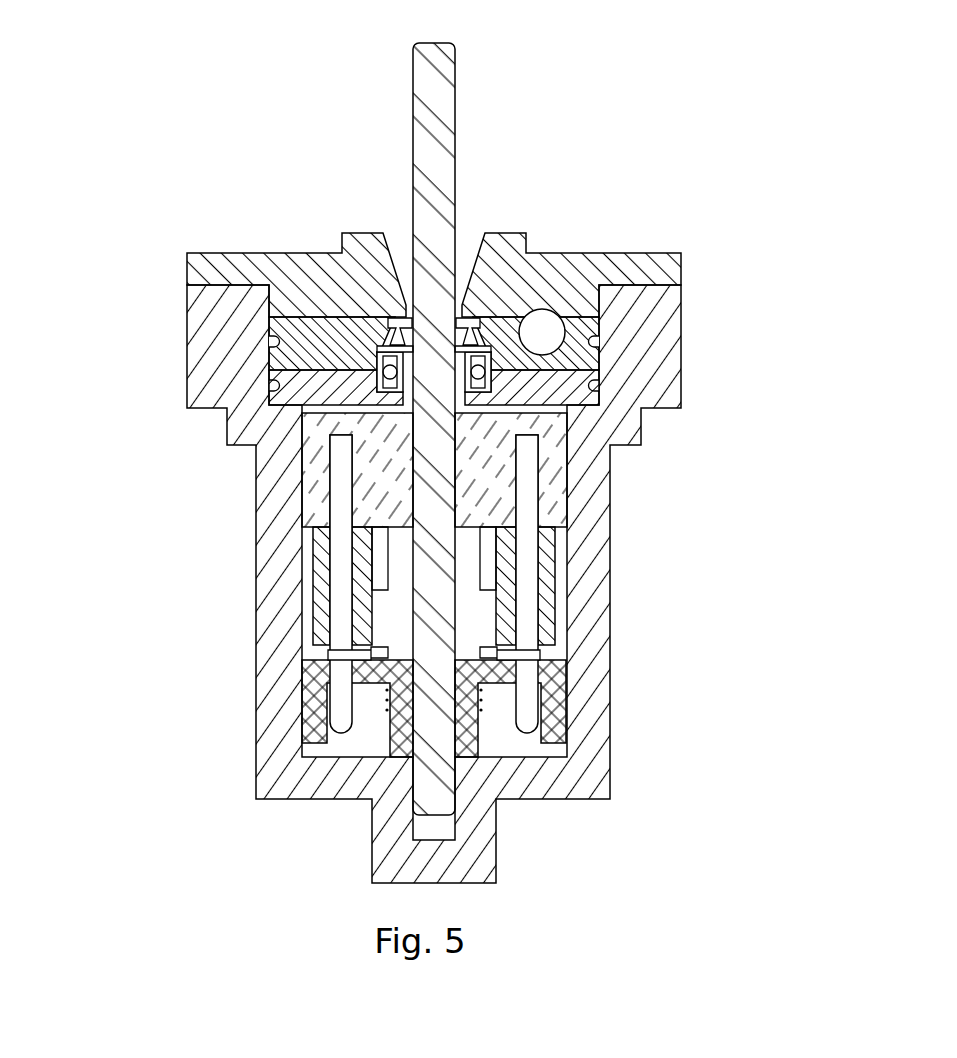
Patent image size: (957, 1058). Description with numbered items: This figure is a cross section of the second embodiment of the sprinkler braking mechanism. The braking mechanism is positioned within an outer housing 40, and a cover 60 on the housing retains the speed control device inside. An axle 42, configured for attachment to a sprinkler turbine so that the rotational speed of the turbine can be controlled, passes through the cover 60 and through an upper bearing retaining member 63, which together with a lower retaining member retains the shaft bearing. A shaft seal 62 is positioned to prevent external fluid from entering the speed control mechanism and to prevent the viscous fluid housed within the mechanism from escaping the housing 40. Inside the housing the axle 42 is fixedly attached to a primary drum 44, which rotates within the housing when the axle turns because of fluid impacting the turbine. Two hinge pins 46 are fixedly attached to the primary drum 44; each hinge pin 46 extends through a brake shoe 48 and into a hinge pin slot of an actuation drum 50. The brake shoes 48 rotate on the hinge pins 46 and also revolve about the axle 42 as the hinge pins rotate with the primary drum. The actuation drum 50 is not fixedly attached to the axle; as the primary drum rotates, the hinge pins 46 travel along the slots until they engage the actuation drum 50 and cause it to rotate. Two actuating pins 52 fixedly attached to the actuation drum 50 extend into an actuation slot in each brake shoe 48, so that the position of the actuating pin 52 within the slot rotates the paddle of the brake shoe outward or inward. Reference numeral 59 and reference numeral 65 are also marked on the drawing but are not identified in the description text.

The outer housing 40 is at (196, 330).
The axle 42 is at (455, 81).
The primary drum 44 is at (553, 488).
The hinge pin 46 is at (338, 555).
The brake shoe 48 is at (553, 535).
The actuation drum 50 is at (313, 698).
The actuating pin 52 is at (488, 652).
The spring 59 is at (387, 708).
The cover 60 is at (305, 266).
The shaft seal 62 is at (468, 311).
The upper bearing retaining member 63 is at (561, 390).
The passage 65 is at (600, 340).